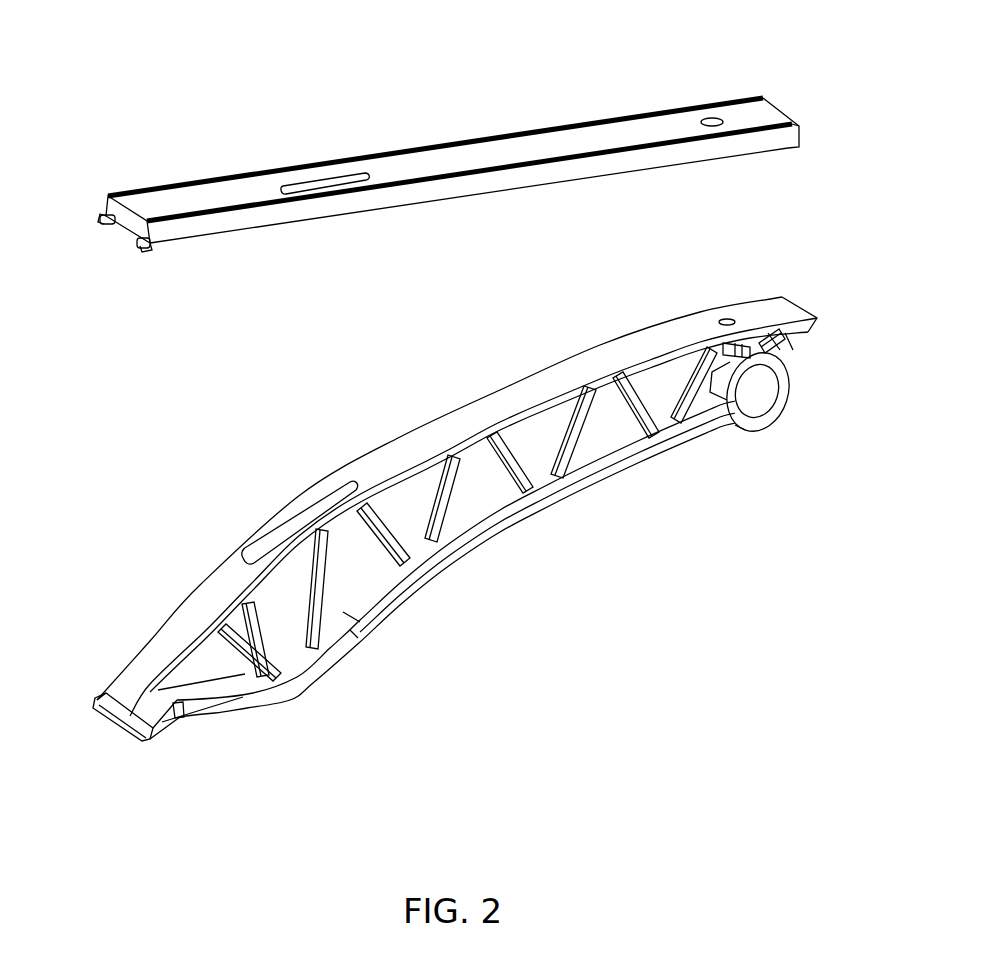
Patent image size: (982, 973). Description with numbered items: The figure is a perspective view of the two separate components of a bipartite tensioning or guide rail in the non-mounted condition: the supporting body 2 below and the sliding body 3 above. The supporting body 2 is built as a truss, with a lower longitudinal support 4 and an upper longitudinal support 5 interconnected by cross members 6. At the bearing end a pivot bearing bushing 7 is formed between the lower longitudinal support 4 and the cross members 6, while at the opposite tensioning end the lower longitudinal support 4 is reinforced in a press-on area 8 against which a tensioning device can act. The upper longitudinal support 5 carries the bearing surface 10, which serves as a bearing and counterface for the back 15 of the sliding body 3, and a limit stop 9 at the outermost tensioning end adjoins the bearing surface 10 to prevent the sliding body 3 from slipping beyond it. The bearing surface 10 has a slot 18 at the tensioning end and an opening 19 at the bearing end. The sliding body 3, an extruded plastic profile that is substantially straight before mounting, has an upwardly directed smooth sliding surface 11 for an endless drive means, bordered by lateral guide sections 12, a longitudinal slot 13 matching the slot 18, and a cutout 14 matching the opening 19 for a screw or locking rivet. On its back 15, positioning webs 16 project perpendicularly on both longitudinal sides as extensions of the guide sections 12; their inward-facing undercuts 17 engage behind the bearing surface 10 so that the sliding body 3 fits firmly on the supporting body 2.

The supporting body 2 is at (800, 285).
The sliding body 3 is at (764, 84).
The lower longitudinal support 4 is at (623, 465).
The upper longitudinal support 5 is at (785, 337).
The cross members 6 is at (510, 480).
The pivot bearing bushing 7 is at (765, 393).
The press-on area 8 is at (327, 670).
The limit stop 9 is at (117, 723).
The bearing surface 10 is at (400, 440).
The sliding surface 11 is at (468, 162).
The guide sections 12 is at (205, 212).
The longitudinal slot 13 is at (313, 186).
The cutout 14 is at (712, 120).
The back 15 is at (121, 228).
The positioning webs 16 is at (97, 210).
The undercuts 17 is at (100, 225).
The slot 18 is at (267, 540).
The opening 19 is at (728, 316).